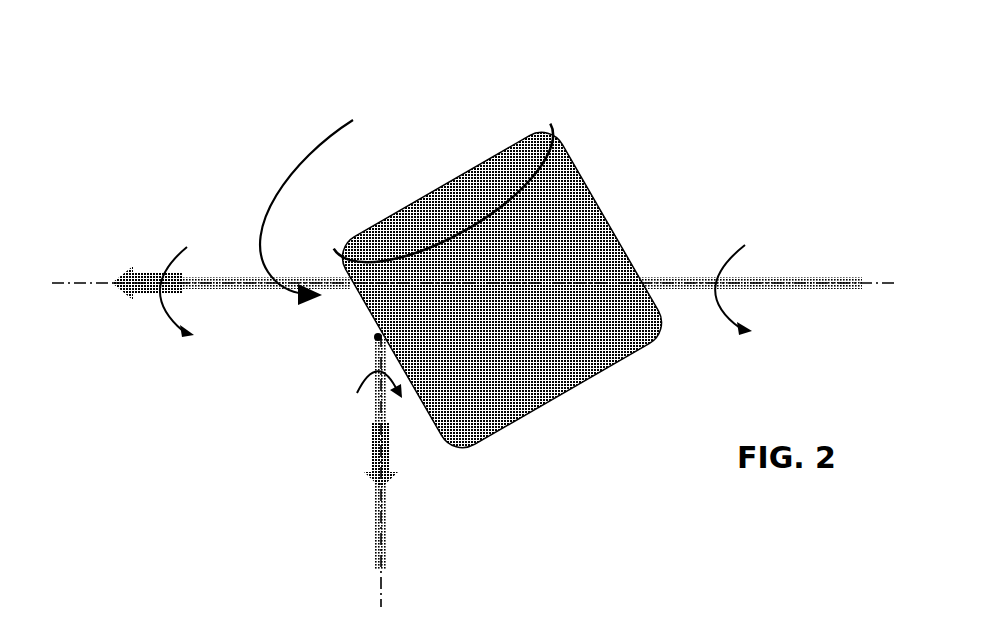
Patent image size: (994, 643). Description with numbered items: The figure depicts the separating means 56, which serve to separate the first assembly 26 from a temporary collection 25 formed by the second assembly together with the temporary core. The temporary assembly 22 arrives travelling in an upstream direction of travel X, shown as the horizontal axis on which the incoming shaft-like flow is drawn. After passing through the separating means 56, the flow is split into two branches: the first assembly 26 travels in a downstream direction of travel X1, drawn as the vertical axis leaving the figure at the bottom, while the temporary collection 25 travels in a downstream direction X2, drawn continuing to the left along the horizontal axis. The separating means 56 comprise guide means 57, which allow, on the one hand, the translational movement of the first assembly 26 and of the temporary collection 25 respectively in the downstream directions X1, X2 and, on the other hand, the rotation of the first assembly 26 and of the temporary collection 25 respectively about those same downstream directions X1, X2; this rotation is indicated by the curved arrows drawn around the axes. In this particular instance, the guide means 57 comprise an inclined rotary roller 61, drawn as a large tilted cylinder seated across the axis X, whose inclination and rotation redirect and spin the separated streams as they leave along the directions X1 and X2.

The separating means 56 is at (223, 98).
The inclined rotary roller 61 is at (528, 111).
The guide means 57 is at (498, 231).
The temporary collection 25 is at (223, 282).
The temporary assembly 22 is at (797, 280).
The first assembly 26 is at (378, 513).
The upstream direction of travel X is at (877, 282).
The downstream direction of travel X1 is at (380, 586).
The downstream direction X2 is at (103, 282).